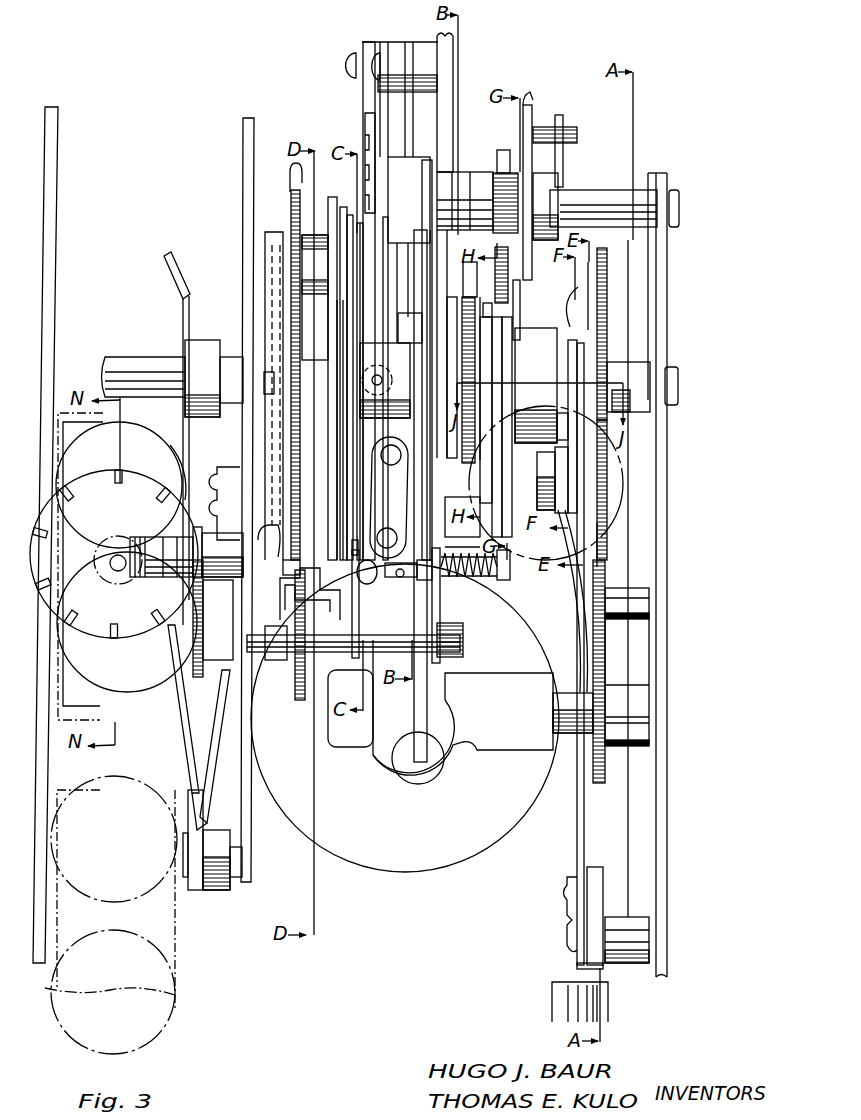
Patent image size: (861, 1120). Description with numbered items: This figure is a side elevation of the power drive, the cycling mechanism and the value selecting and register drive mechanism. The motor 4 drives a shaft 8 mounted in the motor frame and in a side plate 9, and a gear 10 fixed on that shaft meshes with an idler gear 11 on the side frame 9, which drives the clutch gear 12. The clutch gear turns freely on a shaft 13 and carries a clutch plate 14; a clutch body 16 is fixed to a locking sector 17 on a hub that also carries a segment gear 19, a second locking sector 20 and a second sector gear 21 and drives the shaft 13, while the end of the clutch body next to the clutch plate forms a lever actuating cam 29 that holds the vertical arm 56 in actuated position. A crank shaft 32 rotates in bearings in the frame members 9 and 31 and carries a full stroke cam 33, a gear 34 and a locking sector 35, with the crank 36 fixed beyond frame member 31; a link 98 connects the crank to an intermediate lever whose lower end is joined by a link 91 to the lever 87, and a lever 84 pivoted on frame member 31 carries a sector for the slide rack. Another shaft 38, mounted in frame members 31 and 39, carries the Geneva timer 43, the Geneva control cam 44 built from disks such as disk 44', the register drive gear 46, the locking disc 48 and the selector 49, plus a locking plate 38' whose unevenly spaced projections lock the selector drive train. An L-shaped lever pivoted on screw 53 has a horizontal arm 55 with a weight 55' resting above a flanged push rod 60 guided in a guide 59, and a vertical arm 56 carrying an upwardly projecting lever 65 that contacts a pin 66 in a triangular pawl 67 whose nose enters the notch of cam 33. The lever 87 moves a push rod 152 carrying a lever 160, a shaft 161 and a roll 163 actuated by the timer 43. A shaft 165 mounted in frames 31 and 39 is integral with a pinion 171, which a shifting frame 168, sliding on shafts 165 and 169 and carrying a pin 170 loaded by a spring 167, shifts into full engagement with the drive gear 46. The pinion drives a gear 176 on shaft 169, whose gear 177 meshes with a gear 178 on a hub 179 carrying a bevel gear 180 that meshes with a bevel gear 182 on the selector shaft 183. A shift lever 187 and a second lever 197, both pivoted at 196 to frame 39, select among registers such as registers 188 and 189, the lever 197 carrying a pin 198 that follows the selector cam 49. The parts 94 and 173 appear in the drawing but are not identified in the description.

The motor 4 is at (400, 858).
The shaft 8 is at (573, 707).
The side plate 9 is at (660, 787).
The gear 10 is at (600, 760).
The idler gear 11 is at (602, 638).
The clutch gear 12 is at (605, 300).
The shaft 13 is at (678, 382).
The clutch plate 14 is at (599, 340).
The clutch body 16 is at (546, 444).
The locking sector 17 is at (508, 318).
The segment gear 19 is at (508, 294).
The second locking sector 20 is at (487, 315).
The second sector gear 21 is at (469, 465).
The lever actuating cam 29 is at (580, 296).
The frame member 31 is at (432, 120).
The crank shaft 32 is at (585, 197).
The full stroke cam 33 is at (530, 140).
The gear 34 is at (495, 170).
The locking sector 35 is at (512, 160).
The crank 36 is at (407, 358).
The shaft 38 is at (173, 374).
The locking plate 38' is at (160, 438).
The frame member 39 is at (243, 173).
The Geneva gear actuator cam 43 is at (347, 487).
The Geneva gear control cam 44 is at (325, 368).
The disk 44' is at (321, 430).
The register drive gear 46 is at (290, 168).
The locking disc 48 is at (291, 192).
The register selecting cam 49 is at (278, 216).
The screw 53 is at (567, 933).
The horizontal arm 55 is at (562, 969).
The weight 55' is at (618, 895).
The vertical arm 56 is at (580, 827).
The guide 59 is at (556, 1000).
The flanged push rod 60 is at (598, 1001).
The upwardly projecting lever 65 is at (562, 140).
The pin 66 is at (575, 128).
The triangular pawl 67 is at (530, 98).
The lever 84 is at (443, 90).
The lever 87 is at (365, 95).
The link 91 is at (411, 328).
The lever 94 is at (412, 262).
The link 98 is at (368, 123).
The push rod 152 is at (391, 466).
The lever 160 is at (372, 583).
The shaft 161 is at (387, 535).
The roll 163 is at (400, 366).
The shaft 165 is at (393, 567).
The spring 167 is at (452, 590).
The shifting frame 168 is at (359, 617).
The shaft 169 is at (463, 641).
The pin 170 is at (415, 564).
The pinion 171 is at (316, 585).
The plate 173 is at (366, 541).
The gear 176 is at (300, 692).
The gear 177 is at (203, 668).
The gear 178 is at (153, 540).
The hub 179 is at (131, 543).
The bevel gear 180 is at (130, 538).
The bevel gear 182 is at (110, 549).
The selector shaft 183 is at (97, 481).
The shift lever 187 is at (186, 738).
The register 188 is at (121, 437).
The register 189 is at (130, 690).
The pivot 196 is at (183, 848).
The second lever 197 is at (226, 706).
The pin 198 is at (268, 372).